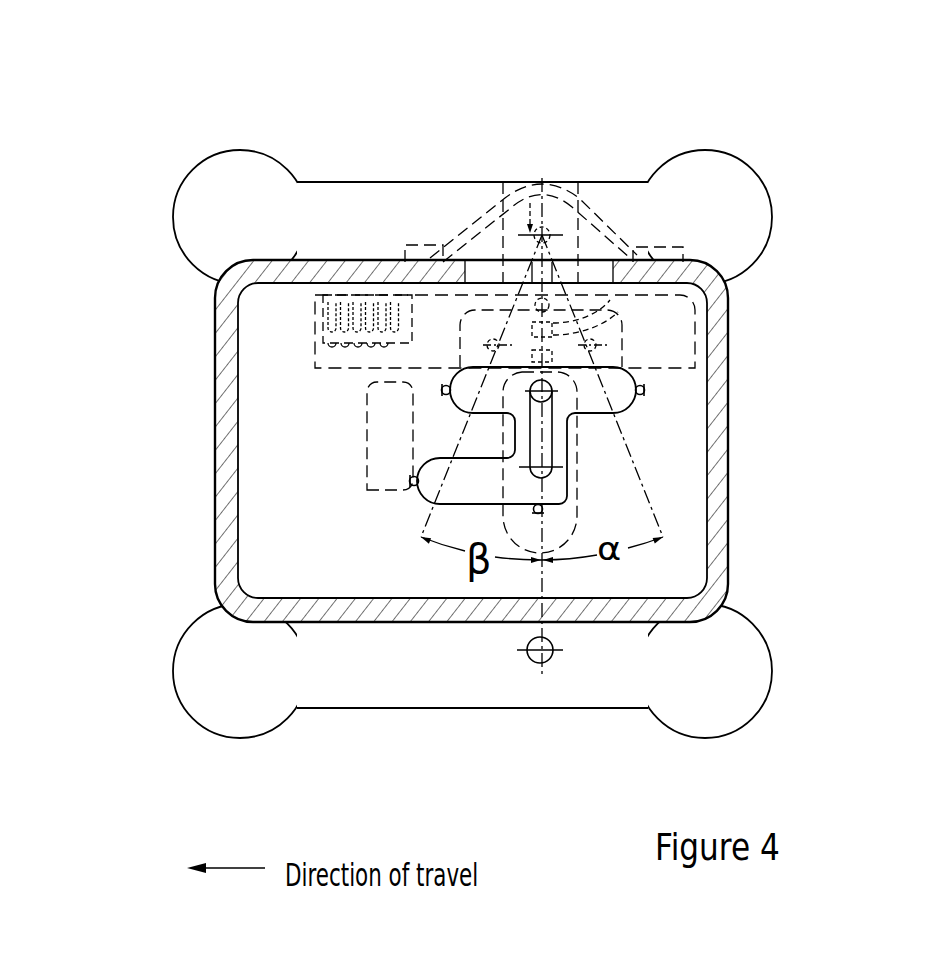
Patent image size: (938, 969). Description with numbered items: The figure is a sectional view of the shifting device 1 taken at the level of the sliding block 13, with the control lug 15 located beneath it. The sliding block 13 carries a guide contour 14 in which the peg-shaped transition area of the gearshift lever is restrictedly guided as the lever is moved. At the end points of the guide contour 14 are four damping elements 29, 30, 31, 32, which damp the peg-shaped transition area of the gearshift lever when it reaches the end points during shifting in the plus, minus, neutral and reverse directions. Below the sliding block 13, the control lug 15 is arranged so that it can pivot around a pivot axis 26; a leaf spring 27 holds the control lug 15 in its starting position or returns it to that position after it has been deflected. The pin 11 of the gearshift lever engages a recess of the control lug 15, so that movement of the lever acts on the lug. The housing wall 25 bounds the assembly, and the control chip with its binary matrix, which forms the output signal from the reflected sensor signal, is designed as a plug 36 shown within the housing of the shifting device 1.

The housing 1 is at (718, 583).
The pin 11 is at (558, 393).
The sliding block 13 is at (600, 410).
The guide contour 14 is at (620, 415).
The control lug 15 is at (603, 327).
The housing wall opening 25 is at (437, 307).
The pivot axis 26 is at (542, 235).
The leaf spring 27 is at (618, 226).
The damping element 29 is at (645, 384).
The damping element 30 is at (441, 390).
The damping element 31 is at (534, 513).
The damping element 32 is at (412, 486).
The plug 36 is at (313, 355).